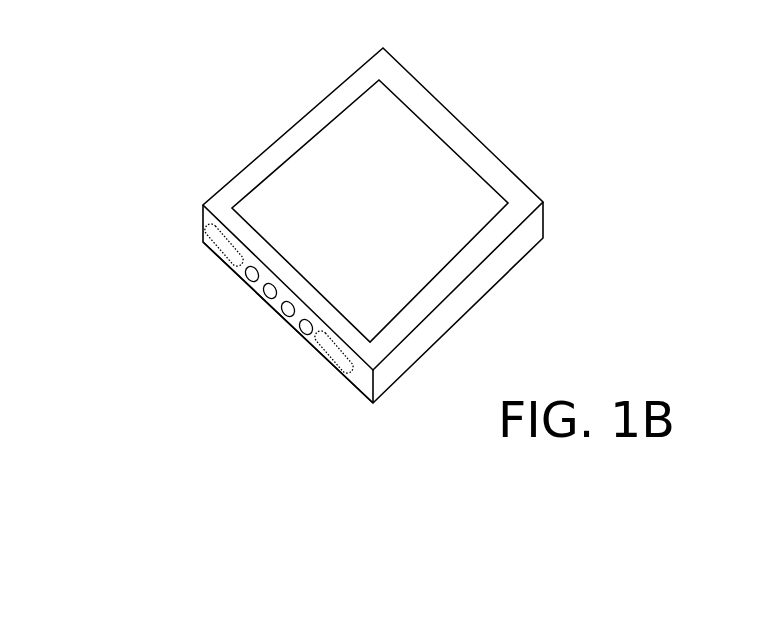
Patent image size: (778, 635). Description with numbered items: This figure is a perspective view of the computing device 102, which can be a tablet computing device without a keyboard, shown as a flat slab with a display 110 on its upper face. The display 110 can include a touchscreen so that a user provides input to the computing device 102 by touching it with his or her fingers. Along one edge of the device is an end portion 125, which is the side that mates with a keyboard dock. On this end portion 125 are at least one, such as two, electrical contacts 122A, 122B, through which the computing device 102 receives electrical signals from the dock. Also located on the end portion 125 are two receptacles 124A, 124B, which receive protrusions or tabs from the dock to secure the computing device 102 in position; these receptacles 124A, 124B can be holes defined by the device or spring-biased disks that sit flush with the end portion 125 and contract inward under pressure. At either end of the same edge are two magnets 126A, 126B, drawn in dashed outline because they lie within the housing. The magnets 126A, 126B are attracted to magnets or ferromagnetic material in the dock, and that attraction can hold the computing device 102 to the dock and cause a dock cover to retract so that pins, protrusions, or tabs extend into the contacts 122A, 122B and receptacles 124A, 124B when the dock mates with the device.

The computing device 102 is at (520, 132).
The display 110 is at (392, 223).
The electrical contact 122A is at (266, 297).
The electrical contact 122B is at (288, 317).
The receptacle 124A is at (247, 281).
The receptacle 124B is at (305, 335).
The end portion 125 is at (141, 336).
The magnet 126A is at (220, 252).
The magnet 126B is at (350, 376).